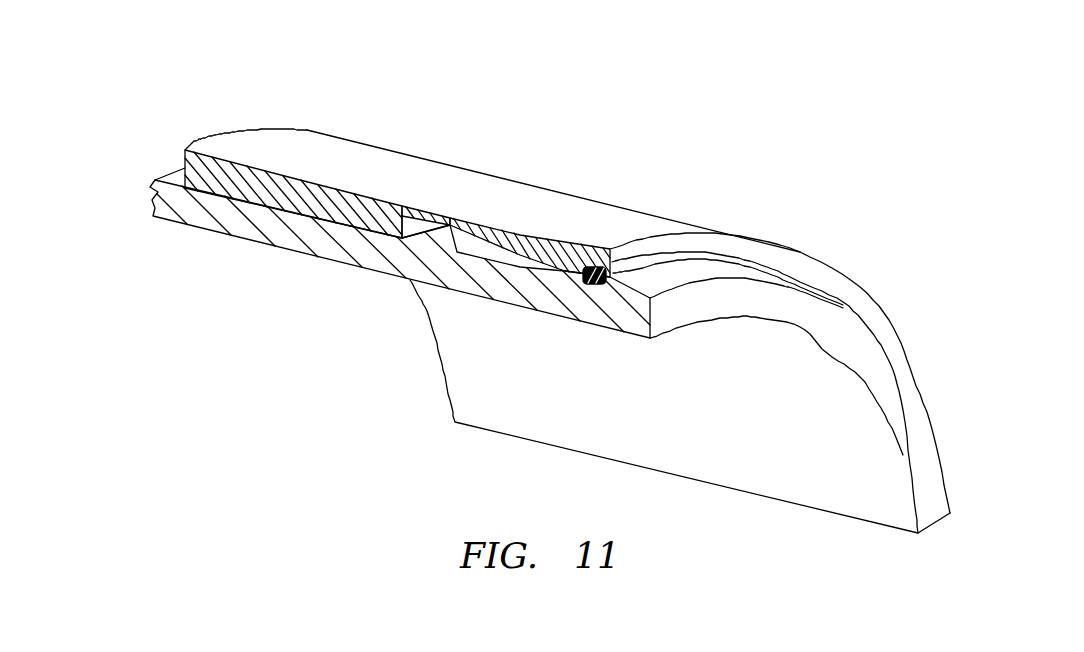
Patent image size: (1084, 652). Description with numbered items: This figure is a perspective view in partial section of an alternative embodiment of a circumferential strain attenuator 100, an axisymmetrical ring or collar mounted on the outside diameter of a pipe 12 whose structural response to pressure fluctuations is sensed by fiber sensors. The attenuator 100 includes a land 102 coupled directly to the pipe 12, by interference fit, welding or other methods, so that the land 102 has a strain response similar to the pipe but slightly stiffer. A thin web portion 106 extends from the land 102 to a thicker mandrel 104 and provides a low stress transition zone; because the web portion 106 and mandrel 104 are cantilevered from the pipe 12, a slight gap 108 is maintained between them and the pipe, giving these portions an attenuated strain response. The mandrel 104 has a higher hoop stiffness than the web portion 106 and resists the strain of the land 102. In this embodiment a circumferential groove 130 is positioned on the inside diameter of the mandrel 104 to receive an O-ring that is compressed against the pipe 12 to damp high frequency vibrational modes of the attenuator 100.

The attenuator 100 is at (628, 279).
The pipe 12 is at (160, 199).
The land 102 is at (247, 172).
The mandrel 104 is at (535, 252).
The web portion 106 is at (428, 210).
The gap 108 is at (532, 280).
The circumferential groove 130 is at (593, 293).